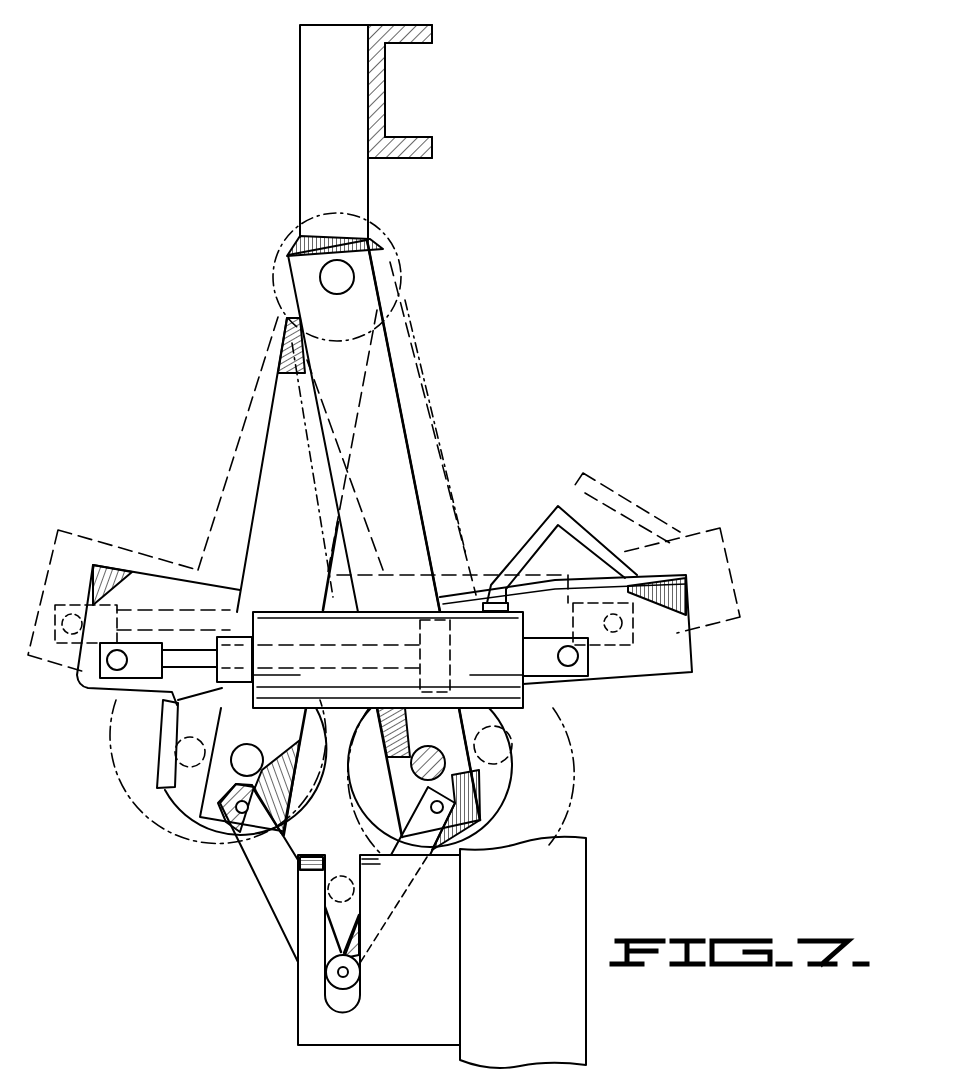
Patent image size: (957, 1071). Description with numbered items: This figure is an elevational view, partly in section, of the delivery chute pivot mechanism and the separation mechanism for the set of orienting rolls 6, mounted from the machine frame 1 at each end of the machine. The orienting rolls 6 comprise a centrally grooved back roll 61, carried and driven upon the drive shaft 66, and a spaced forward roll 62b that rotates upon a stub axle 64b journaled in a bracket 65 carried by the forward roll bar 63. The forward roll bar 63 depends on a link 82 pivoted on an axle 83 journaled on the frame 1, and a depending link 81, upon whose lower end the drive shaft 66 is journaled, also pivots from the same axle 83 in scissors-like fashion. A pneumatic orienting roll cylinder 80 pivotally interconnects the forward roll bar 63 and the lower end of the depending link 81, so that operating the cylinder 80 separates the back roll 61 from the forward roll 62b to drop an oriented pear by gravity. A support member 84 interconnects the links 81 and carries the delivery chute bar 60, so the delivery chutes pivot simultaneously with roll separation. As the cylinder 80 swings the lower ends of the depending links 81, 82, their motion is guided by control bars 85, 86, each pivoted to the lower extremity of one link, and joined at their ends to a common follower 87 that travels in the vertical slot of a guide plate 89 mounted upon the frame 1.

The frame 1 is at (307, 68).
The axle 83 is at (345, 272).
The link 82 is at (275, 419).
The depending link 81 is at (403, 433).
The pneumatic orienting roll cylinder 80 is at (498, 666).
The support member 84 is at (682, 668).
The chute bar 60 is at (545, 525).
The forward roll bar 63 is at (90, 690).
The bracket 65 is at (170, 790).
The forward roll 62b is at (202, 832).
The stub axle 64b is at (245, 783).
The back roll 61 is at (462, 755).
The drive shaft 66 is at (447, 771).
The control bar 85 is at (283, 900).
The control bar 86 is at (444, 852).
The follower 87 is at (330, 972).
The guide plate 89 is at (355, 862).
The orienting rolls 6 is at (226, 916).